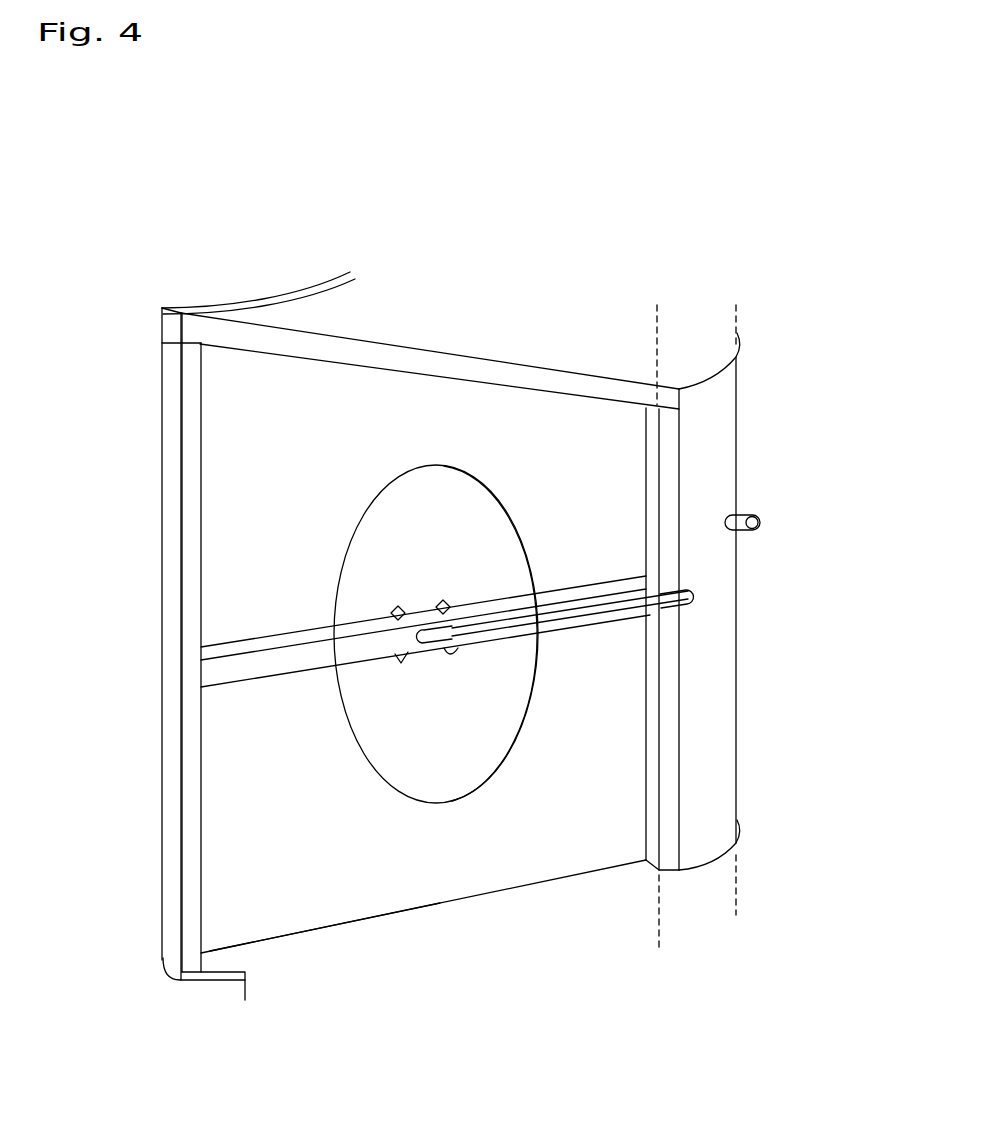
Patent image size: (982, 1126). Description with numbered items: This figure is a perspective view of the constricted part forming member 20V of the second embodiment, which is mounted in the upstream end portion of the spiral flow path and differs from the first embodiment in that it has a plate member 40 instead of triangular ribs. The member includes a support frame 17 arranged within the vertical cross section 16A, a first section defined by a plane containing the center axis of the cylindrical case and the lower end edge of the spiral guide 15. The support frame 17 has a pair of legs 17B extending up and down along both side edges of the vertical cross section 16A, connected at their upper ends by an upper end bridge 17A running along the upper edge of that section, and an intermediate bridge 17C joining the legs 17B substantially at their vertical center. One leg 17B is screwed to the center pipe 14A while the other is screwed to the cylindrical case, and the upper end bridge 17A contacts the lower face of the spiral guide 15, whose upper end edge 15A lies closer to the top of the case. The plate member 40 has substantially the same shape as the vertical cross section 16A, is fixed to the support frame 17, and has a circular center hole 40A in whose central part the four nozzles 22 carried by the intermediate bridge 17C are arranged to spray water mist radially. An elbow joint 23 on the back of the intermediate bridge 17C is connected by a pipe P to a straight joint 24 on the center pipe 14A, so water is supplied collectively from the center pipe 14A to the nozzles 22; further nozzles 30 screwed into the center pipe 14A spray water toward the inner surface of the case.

The center pipe 14A is at (722, 757).
The spiral guide 15 is at (207, 985).
The upper end edge 15A is at (352, 922).
The vertical cross section 16A is at (645, 852).
The support frame 17 is at (158, 800).
The upper end bridge 17A is at (398, 372).
The legs 17B is at (203, 844).
The intermediate bridge 17C is at (305, 662).
The constricted part forming member 20V is at (158, 393).
The nozzles 22 is at (443, 604).
The elbow joint 23 is at (458, 642).
The straight joint 24 is at (692, 596).
The nozzles 30 is at (748, 517).
The plate member 40 is at (225, 574).
The center hole 40A is at (330, 586).
The pipe P is at (576, 632).